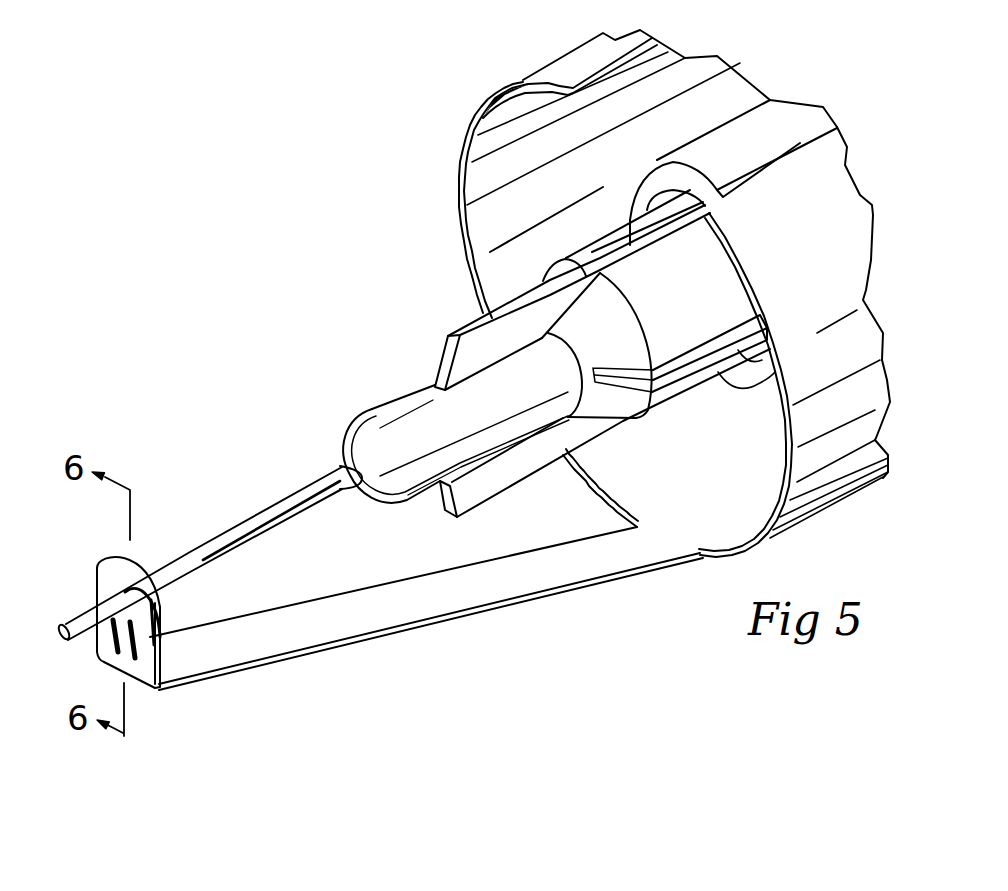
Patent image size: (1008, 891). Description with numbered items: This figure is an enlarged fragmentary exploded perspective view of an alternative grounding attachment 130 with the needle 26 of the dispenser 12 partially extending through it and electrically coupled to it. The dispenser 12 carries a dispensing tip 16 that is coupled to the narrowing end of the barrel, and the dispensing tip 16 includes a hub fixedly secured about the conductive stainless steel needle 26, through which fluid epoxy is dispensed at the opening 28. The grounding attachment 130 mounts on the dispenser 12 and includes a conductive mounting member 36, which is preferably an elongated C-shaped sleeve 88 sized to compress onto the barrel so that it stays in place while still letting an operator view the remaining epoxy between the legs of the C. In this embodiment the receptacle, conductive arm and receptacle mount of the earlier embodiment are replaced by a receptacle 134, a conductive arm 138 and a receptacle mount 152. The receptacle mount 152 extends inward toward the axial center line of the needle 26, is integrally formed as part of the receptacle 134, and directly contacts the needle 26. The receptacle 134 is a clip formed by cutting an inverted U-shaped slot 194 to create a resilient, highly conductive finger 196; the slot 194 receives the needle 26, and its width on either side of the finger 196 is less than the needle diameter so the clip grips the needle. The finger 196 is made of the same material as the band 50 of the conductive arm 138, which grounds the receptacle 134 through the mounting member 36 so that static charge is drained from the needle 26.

The dispenser 12 is at (728, 108).
The dispensing tip 16 is at (381, 390).
The needle 26 is at (253, 514).
The opening 28 is at (72, 615).
The conductive mounting member 36 is at (870, 192).
The band 50 is at (407, 630).
The sleeve 88 is at (843, 260).
The grounding attachment 130 is at (538, 62).
The receptacle 134 is at (143, 702).
The conductive arm 138 is at (522, 608).
The receptacle mount 152 is at (124, 557).
The slot 194 is at (160, 601).
The finger 196 is at (160, 632).